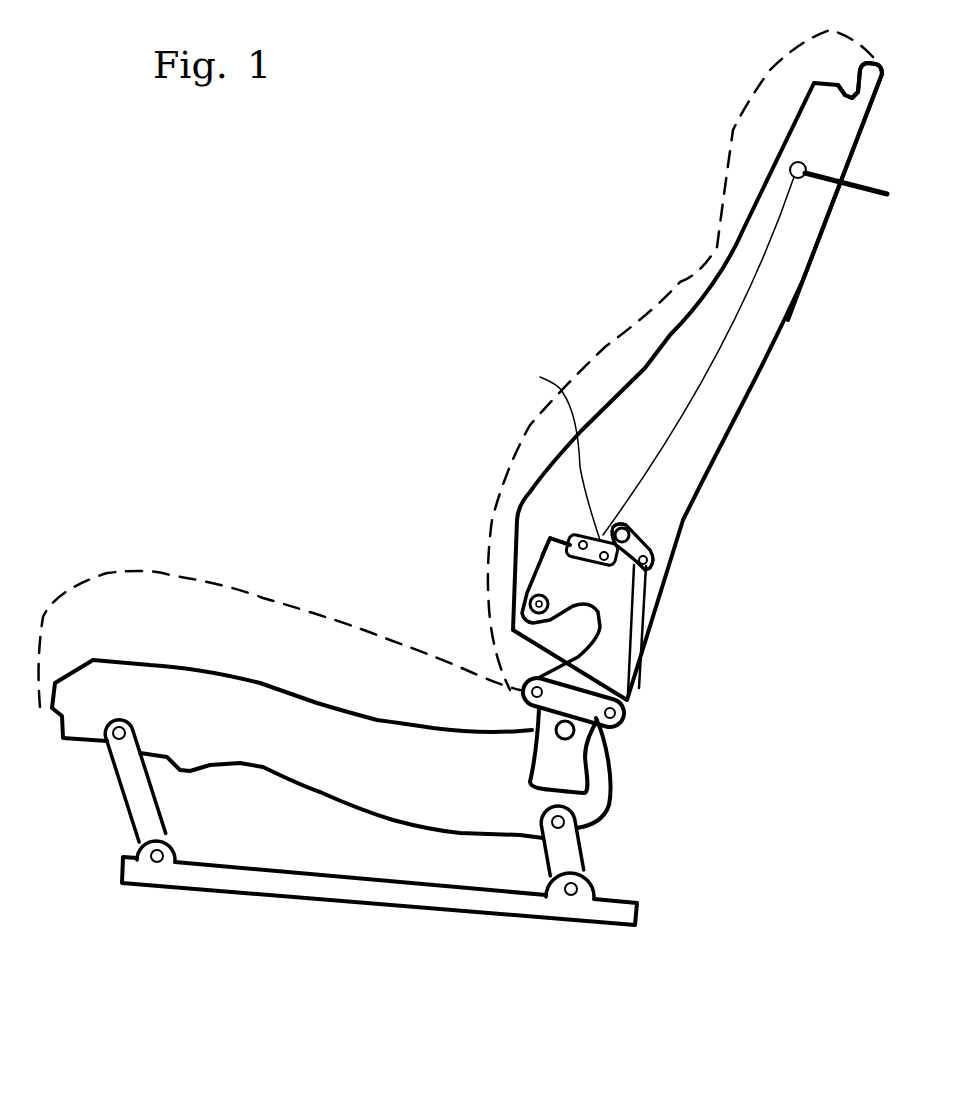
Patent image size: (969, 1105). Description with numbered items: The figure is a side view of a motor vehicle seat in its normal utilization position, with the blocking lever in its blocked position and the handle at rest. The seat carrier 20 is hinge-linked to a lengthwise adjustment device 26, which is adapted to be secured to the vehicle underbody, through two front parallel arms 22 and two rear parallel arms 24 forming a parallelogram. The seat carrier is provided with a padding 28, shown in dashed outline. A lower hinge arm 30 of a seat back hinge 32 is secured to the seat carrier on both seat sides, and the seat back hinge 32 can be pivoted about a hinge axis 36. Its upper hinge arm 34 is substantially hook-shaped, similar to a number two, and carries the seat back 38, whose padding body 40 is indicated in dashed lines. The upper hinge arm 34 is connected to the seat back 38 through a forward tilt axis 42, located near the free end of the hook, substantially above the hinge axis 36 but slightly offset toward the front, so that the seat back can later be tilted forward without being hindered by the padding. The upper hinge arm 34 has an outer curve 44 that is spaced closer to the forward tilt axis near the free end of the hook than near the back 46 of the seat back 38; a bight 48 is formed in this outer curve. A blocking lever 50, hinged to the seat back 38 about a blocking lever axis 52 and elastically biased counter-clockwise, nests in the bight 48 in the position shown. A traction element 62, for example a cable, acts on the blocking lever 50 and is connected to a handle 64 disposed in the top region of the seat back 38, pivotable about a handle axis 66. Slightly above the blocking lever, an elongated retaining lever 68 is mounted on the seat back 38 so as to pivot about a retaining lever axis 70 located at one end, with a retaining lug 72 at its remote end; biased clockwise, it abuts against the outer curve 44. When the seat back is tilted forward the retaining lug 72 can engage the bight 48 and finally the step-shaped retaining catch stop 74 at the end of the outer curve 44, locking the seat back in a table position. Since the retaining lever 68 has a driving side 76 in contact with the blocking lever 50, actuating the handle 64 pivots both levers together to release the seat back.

The seat carrier 20 is at (300, 760).
The front parallel arms 22 is at (150, 810).
The rear parallel arms 24 is at (562, 860).
The lengthwise adjustment device 26 is at (472, 905).
The padding 28 is at (172, 613).
The lower hinge arm 30 is at (572, 785).
The seat back hinge 32 is at (613, 752).
The upper hinge arm 34 is at (625, 708).
The hinge axis 36 is at (574, 730).
The seat back 38 is at (740, 380).
The padding body 40 is at (572, 342).
The forward tilt axis 42 is at (530, 604).
The outer curve 44 is at (655, 572).
The back 46 is at (788, 321).
The bight 48 is at (565, 560).
The blocking lever 50 is at (540, 377).
The blocking lever axis 52 is at (603, 537).
The traction element 62 is at (738, 305).
The handle 64 is at (880, 200).
The handle axis 66 is at (790, 164).
The retaining lever 68 is at (640, 537).
The retaining lever axis 70 is at (628, 524).
The retaining lug 72 is at (652, 637).
The retaining catch stop 74 is at (550, 535).
The driving side 76 is at (650, 565).